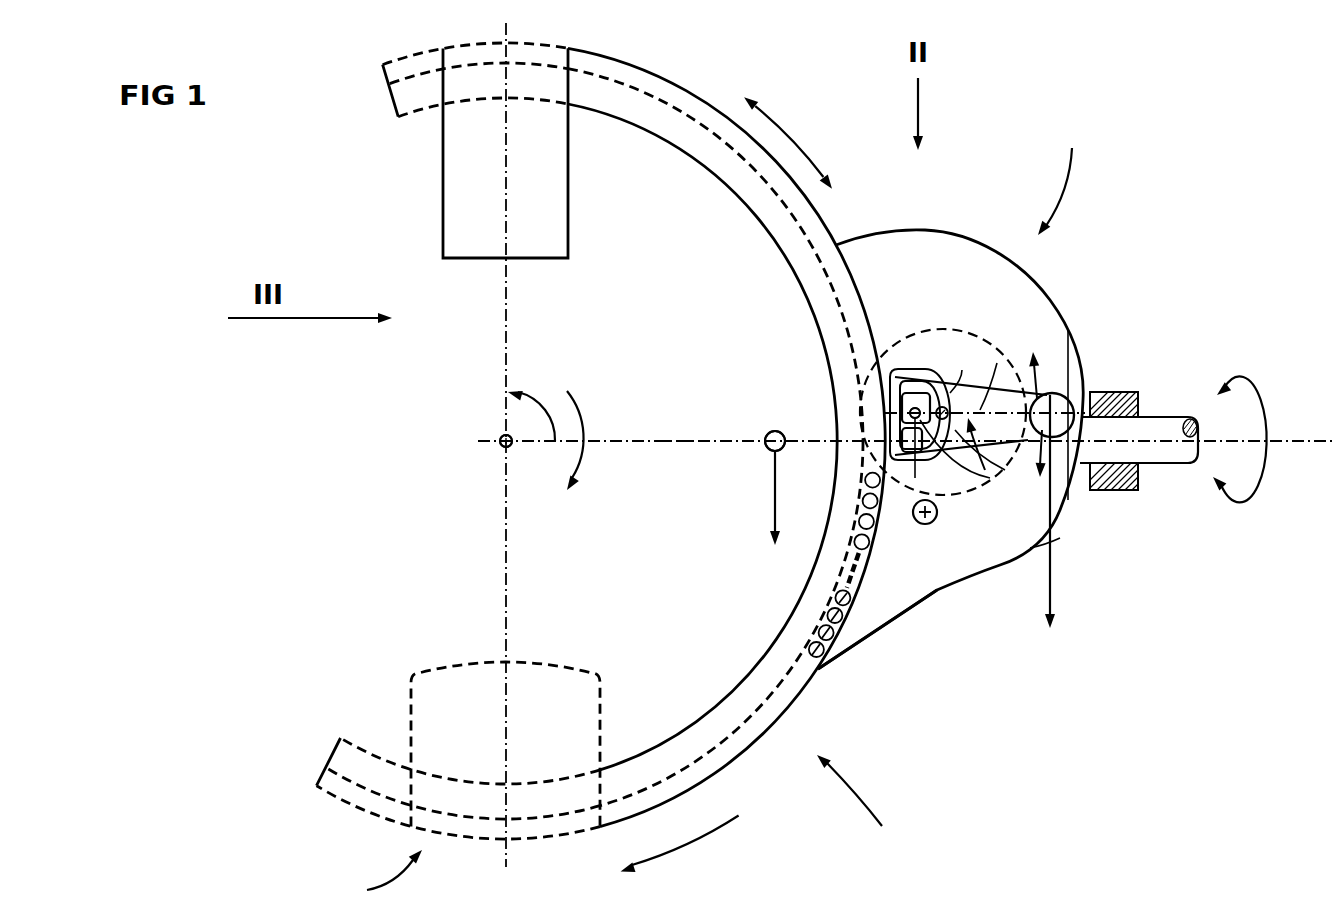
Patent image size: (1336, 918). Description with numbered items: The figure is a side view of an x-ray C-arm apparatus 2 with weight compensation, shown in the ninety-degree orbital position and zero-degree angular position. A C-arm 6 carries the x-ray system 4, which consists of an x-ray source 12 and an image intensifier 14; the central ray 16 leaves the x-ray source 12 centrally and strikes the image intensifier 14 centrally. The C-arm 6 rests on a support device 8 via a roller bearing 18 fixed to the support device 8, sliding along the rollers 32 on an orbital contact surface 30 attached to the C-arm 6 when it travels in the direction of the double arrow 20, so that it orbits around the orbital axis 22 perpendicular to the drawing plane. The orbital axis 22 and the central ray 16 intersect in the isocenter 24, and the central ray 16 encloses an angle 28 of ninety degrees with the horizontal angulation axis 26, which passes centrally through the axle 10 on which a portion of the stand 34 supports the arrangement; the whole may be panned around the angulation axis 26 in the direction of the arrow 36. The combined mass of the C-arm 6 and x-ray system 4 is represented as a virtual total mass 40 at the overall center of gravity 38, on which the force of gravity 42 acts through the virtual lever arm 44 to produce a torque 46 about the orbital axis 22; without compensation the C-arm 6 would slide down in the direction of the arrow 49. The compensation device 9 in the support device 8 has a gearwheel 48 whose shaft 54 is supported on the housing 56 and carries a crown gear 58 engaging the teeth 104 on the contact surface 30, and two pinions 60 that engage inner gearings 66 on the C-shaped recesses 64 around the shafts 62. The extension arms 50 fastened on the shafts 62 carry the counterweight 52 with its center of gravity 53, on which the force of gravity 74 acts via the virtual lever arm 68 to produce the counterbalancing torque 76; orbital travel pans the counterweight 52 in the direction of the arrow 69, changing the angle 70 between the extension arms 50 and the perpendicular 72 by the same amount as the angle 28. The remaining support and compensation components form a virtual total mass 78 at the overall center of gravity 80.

The x-ray C-arm apparatus 2 is at (320, 148).
The x-ray system 4 is at (384, 878).
The C-arm 6 is at (859, 800).
The support device 8 is at (1064, 175).
The compensation device 9 is at (902, 312).
The axle 10 is at (1167, 427).
The x-ray source 12 is at (432, 708).
The image intensifier 14 is at (552, 191).
The central ray 16 is at (504, 338).
The roller bearing 18 is at (862, 646).
The double arrow 20 is at (792, 140).
The orbital axis 22 is at (500, 450).
The isocenter 24 is at (500, 436).
The angulation axis 26 is at (620, 443).
The angle 28 is at (533, 400).
The orbital contact surface 30 is at (727, 740).
The rollers 32 is at (835, 606).
The stand 34 is at (1117, 403).
The arrow 36 is at (1238, 380).
The overall center of gravity 38 is at (782, 432).
The virtual total mass 40 is at (768, 432).
The force of gravity 42 is at (772, 492).
The virtual lever arm 44 is at (675, 443).
The torque 46 is at (583, 422).
The gearwheel 48 is at (1060, 538).
The arrow 49 is at (693, 843).
The extension arms 50 is at (1040, 515).
The counterweight 52 is at (1072, 402).
The center of gravity 53 is at (1040, 380).
The shaft 54 is at (920, 365).
The housing 56 is at (987, 270).
The crown gear 58 is at (1045, 485).
The pinions 60 is at (977, 465).
The shafts 62 is at (930, 460).
The C-shaped recesses 64 is at (942, 460).
The inner gearings 66 is at (950, 393).
The virtual lever arm 68 is at (997, 363).
The arrow 69 is at (1068, 330).
The angle 70 is at (943, 460).
The perpendicular 72 is at (868, 482).
The force of gravity 74 is at (1055, 581).
The torque 76 is at (893, 387).
The virtual total mass 78 is at (925, 500).
The overall center of gravity 80 is at (924, 525).
The teeth 104 is at (673, 108).